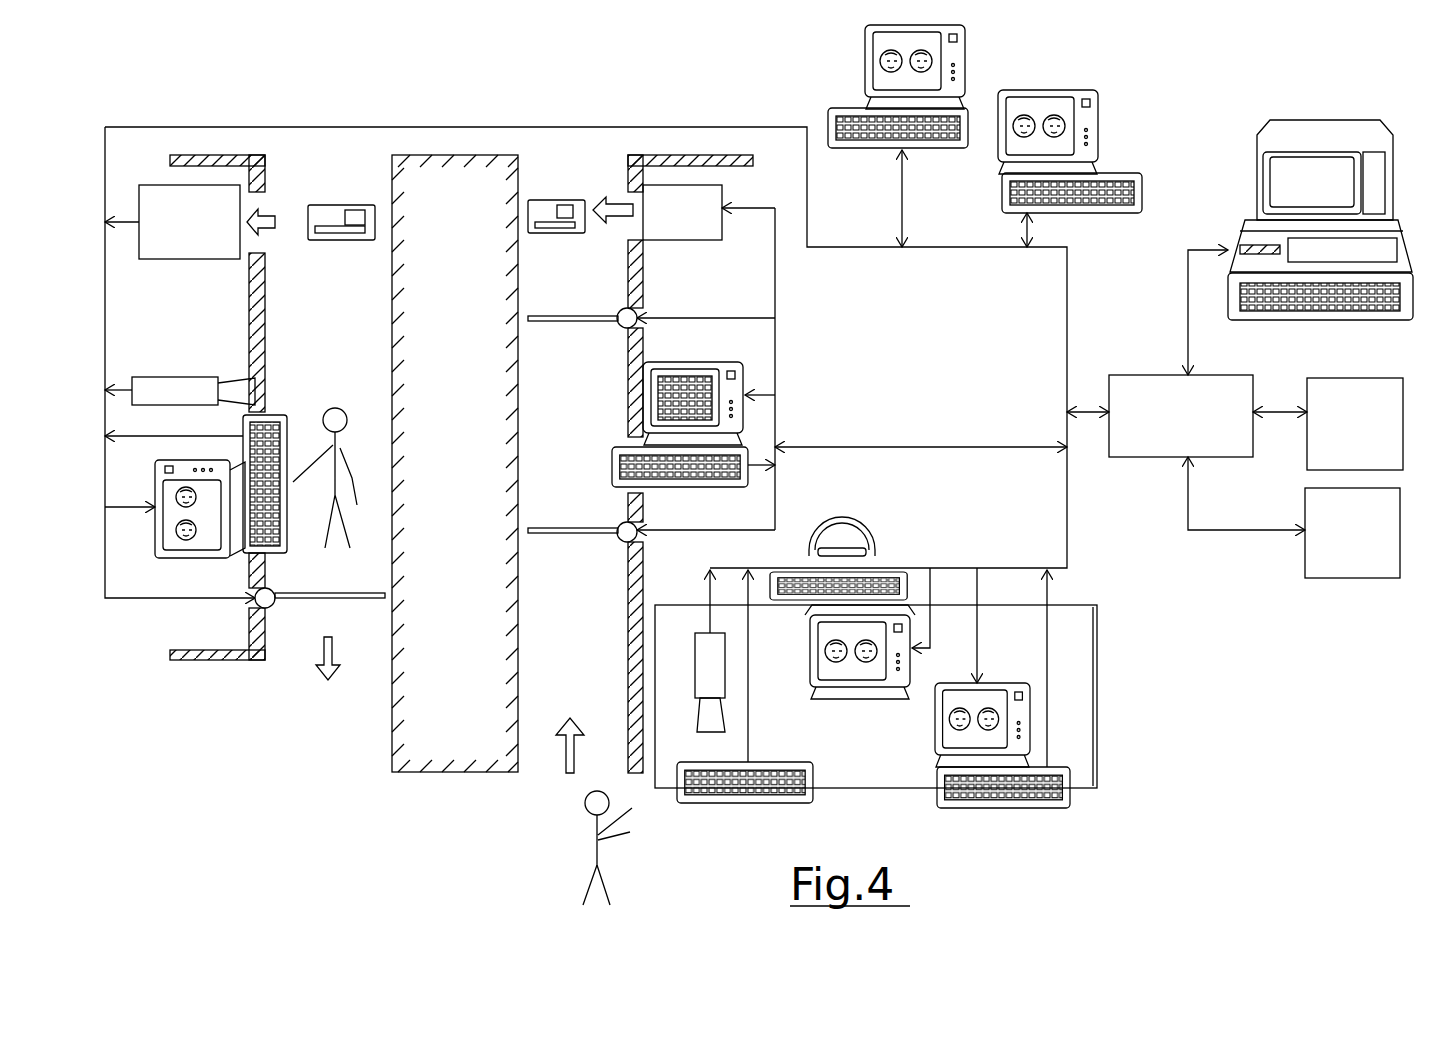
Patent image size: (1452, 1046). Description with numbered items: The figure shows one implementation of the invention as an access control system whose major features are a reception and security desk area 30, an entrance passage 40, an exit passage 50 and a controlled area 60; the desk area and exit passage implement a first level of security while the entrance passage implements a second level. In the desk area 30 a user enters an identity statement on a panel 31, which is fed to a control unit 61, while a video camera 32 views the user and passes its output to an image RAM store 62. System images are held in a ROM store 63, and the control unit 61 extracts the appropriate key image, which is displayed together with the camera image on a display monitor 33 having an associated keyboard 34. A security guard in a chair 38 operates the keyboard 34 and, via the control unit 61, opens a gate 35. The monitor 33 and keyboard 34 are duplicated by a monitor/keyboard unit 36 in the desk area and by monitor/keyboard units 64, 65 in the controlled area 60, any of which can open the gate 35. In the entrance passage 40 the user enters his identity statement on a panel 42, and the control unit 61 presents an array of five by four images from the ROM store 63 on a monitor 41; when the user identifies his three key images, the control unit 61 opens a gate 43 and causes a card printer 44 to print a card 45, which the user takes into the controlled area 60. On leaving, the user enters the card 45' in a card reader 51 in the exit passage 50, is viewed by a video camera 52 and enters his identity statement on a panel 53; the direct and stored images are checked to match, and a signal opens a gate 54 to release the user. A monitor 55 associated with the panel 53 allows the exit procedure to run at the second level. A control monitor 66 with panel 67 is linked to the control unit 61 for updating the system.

The reception and security desk area 30 is at (690, 899).
The panel 31 is at (740, 795).
The video camera 32 is at (700, 658).
The display monitor 33 is at (858, 690).
The keyboard 34 is at (893, 572).
The gate 35 is at (558, 536).
The monitor/keyboard unit 36 is at (1010, 683).
The chair 38 is at (848, 515).
The entrance passage 40 is at (590, 389).
The monitor 41 is at (690, 362).
The panel 42 is at (612, 470).
The gate 43 is at (540, 316).
The card printer 44 is at (722, 228).
The card 45 is at (561, 193).
The card 45' is at (341, 196).
The exit passage 50 is at (355, 323).
The card reader 51 is at (158, 259).
The video camera 52 is at (180, 380).
The panel 53 is at (274, 412).
The gate 54 is at (315, 606).
The monitor 55 is at (195, 558).
The controlled area 60 is at (550, 77).
The control unit 61 is at (1153, 457).
The image RAM store 62 is at (1400, 548).
The ROM store 63 is at (1403, 415).
The monitor/keyboard unit 64 is at (865, 60).
The monitor/keyboard unit 65 is at (1060, 90).
The control monitor 66 is at (1385, 172).
The panel 67 is at (1395, 296).